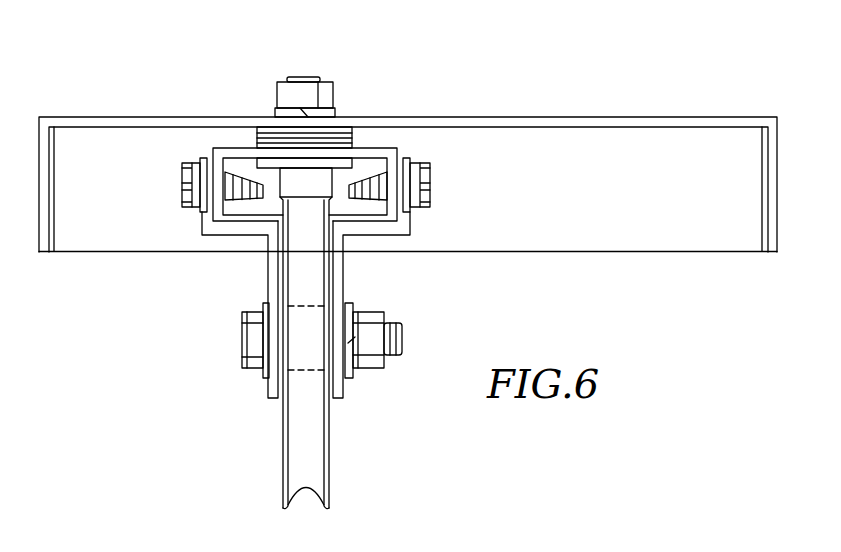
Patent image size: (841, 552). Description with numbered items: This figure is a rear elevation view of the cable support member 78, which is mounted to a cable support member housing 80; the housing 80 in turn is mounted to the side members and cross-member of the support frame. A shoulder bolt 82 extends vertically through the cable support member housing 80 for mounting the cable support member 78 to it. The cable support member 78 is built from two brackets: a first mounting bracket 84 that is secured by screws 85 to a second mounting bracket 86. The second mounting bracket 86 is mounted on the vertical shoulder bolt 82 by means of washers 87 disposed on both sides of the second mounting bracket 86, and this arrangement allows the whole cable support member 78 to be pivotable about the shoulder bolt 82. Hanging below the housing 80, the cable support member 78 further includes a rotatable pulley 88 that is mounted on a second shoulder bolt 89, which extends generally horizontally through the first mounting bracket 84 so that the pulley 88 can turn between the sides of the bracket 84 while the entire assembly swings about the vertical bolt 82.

The cable support member 78 is at (357, 447).
The cable support member housing 80 is at (587, 122).
The shoulder bolt 82 is at (313, 79).
The first mounting bracket 84 is at (340, 278).
The screws 85 is at (182, 169).
The second mounting bracket 86 is at (381, 152).
The washers 87 is at (258, 167).
The rotatable pulley 88 is at (295, 440).
The shoulder bolt 89 is at (403, 327).